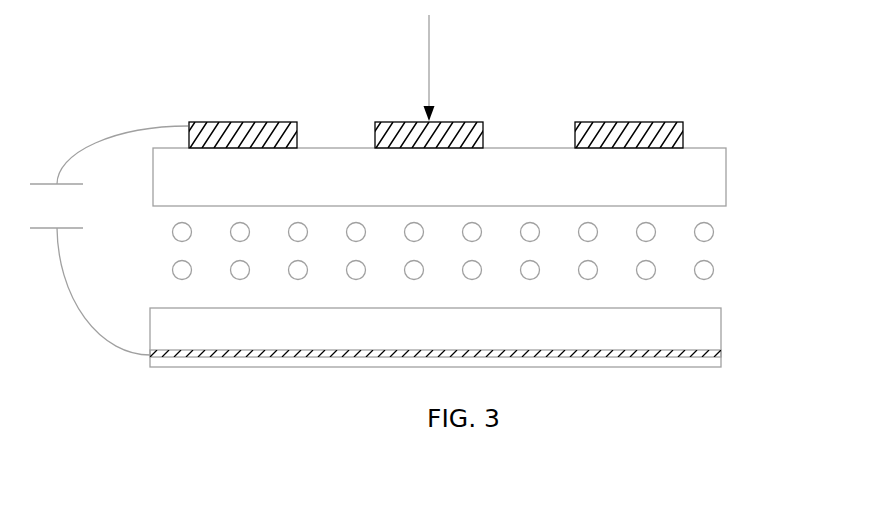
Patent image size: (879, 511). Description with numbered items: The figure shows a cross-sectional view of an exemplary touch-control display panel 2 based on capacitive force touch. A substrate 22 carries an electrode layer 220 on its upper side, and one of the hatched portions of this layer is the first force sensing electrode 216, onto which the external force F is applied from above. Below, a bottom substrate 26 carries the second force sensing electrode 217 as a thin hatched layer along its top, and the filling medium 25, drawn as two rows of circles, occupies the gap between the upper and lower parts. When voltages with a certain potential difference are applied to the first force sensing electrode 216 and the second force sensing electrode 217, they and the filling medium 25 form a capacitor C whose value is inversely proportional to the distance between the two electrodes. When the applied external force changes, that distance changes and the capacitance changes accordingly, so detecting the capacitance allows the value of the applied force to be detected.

The touch device 2 is at (92, 34).
The substrate 22 is at (710, 186).
The electrode layer 220 is at (688, 139).
The first force sensing electrode 216 is at (457, 127).
The filling medium 25 is at (705, 267).
The bottom substrate 26 is at (712, 319).
The second force sensing electrode 217 is at (715, 355).